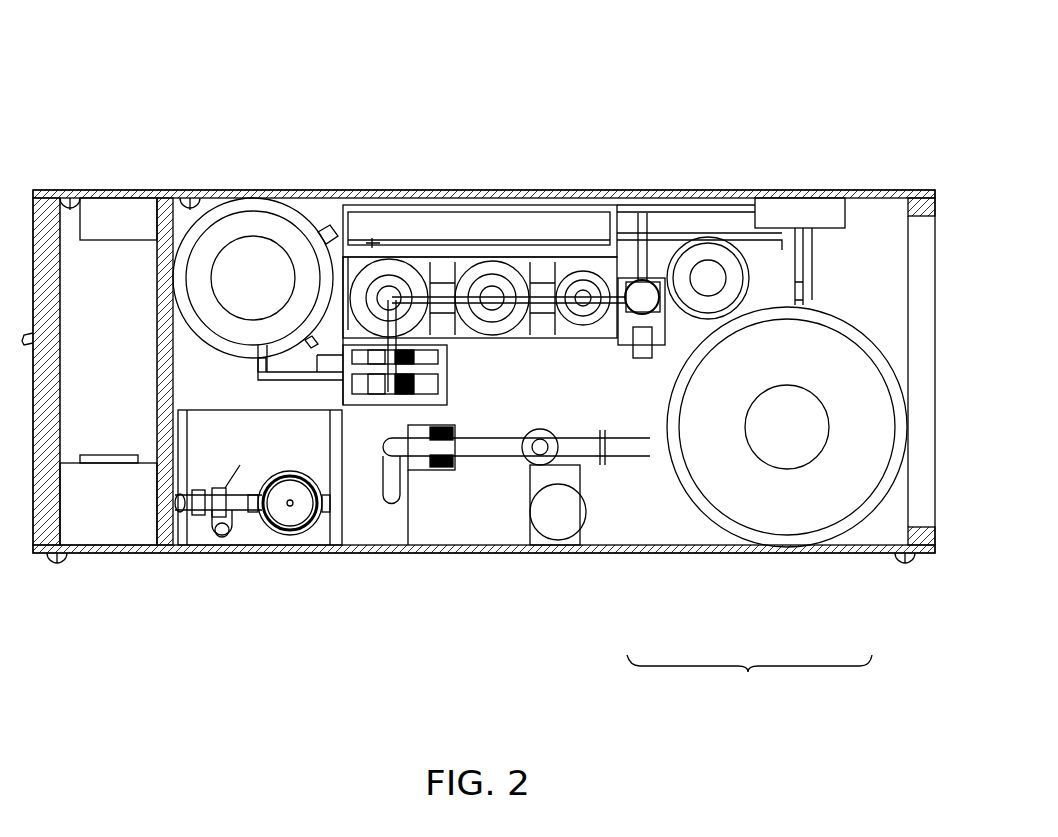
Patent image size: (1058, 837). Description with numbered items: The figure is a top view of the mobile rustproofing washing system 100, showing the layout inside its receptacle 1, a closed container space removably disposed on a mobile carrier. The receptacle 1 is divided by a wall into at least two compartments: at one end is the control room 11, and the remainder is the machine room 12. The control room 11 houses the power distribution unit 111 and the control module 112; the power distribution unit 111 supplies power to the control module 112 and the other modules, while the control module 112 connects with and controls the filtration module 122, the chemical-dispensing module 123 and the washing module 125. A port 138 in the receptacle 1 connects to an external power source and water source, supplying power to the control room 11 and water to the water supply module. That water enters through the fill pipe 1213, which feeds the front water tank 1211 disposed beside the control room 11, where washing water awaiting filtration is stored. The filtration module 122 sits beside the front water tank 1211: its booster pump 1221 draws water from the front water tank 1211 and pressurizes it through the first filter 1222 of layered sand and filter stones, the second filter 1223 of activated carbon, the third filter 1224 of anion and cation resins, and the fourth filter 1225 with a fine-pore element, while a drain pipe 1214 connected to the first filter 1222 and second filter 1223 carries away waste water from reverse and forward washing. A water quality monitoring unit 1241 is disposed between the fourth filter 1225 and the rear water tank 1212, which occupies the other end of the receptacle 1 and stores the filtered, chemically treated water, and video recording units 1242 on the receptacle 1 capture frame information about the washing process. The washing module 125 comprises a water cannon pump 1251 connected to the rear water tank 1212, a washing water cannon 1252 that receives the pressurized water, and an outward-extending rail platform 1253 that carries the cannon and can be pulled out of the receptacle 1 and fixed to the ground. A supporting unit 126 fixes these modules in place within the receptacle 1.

The mobile rustproofing washing system 100 is at (48, 17).
The receptacle 1 is at (878, 186).
The control room 11 is at (106, 358).
The power distribution unit 111 is at (127, 213).
The control module 112 is at (108, 517).
The machine room 12 is at (508, 380).
The filtration module 122 is at (455, 98).
The front water tank 1211 is at (250, 216).
The rear water tank 1212 is at (780, 518).
The fill pipe 1213 is at (320, 233).
The drain pipe 1214 is at (503, 232).
The booster pump 1221 is at (378, 386).
The first filter 1222 is at (367, 268).
The second filter 1223 is at (473, 264).
The third filter 1224 is at (585, 280).
The fourth filter 1225 is at (654, 296).
The chemical-dispensing module 123 is at (709, 250).
The water quality monitoring unit 1241 is at (637, 360).
The video recording unit 1242 is at (70, 197).
The washing module 125 is at (502, 616).
The water cannon pump 1251 is at (450, 465).
The washing water cannon 1252 is at (258, 517).
The outward-extending rail platform 1253 is at (200, 532).
The supporting unit 126 is at (372, 243).
The port 138 is at (830, 207).